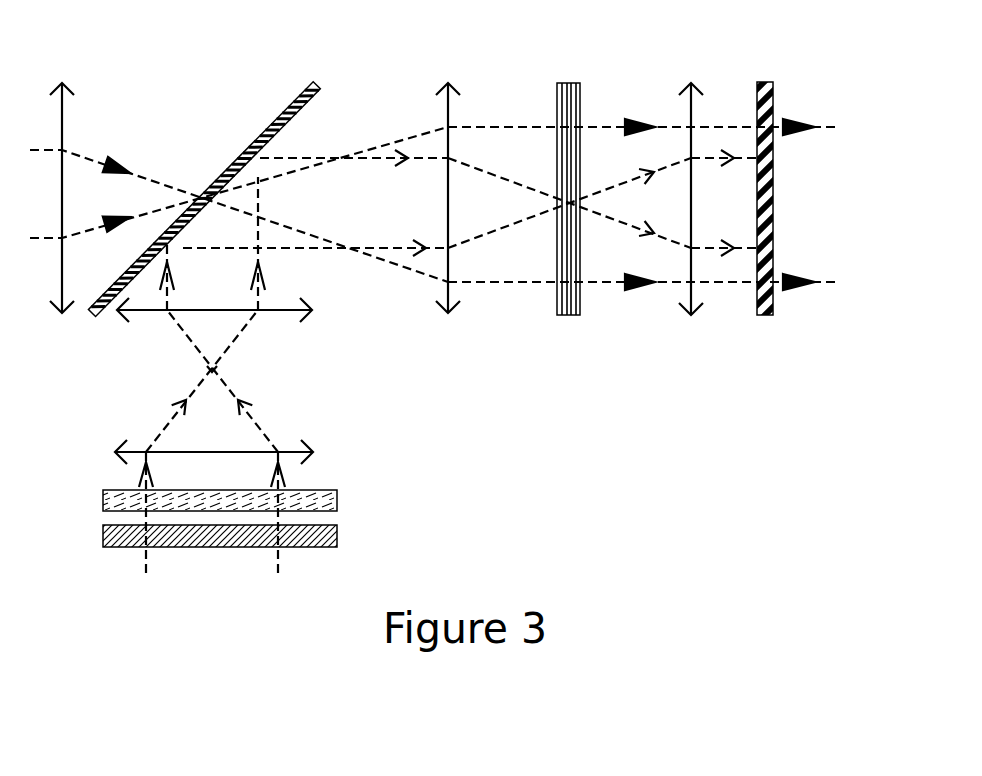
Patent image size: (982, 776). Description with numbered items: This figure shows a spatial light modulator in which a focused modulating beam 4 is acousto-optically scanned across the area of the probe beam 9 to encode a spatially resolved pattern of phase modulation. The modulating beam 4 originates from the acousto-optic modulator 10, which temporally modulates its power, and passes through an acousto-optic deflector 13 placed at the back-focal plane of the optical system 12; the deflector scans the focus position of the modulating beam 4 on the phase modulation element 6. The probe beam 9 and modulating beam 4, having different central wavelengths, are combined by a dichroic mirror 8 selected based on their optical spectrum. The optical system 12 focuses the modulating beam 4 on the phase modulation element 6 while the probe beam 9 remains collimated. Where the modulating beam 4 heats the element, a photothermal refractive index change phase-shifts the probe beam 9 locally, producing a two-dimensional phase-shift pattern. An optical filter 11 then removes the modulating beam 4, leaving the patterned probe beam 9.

The probe beam 9 is at (95, 163).
The dichroic mirror 8 is at (318, 84).
The optical system 12 is at (450, 83).
The phase modulation element 6 is at (578, 83).
The optical filter 11 is at (772, 83).
The acousto-optic deflector 13 is at (337, 500).
The acousto-optic modulator 10 is at (337, 536).
The modulating beam 4 is at (278, 547).